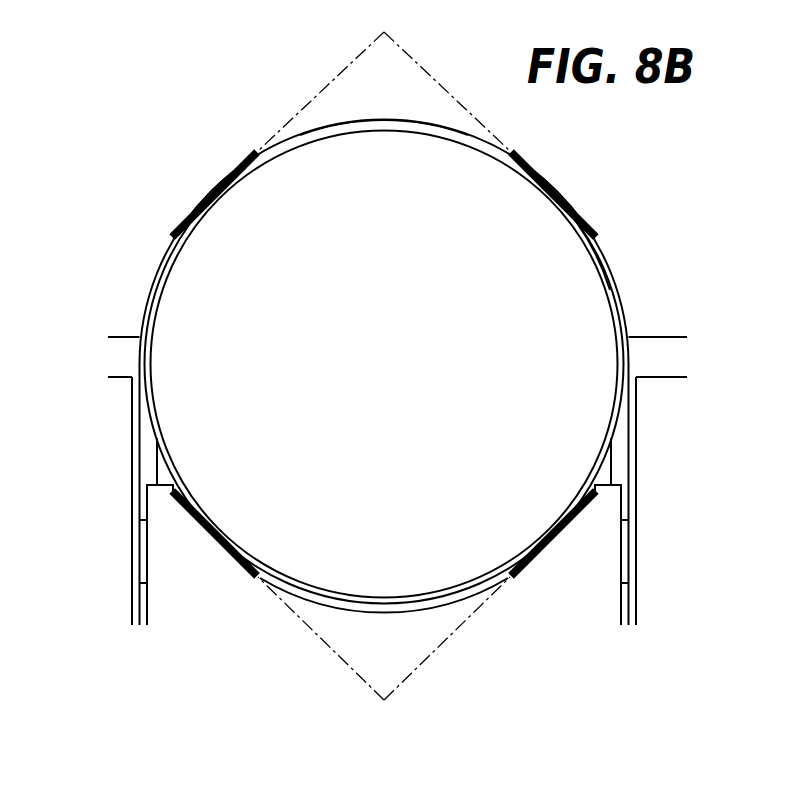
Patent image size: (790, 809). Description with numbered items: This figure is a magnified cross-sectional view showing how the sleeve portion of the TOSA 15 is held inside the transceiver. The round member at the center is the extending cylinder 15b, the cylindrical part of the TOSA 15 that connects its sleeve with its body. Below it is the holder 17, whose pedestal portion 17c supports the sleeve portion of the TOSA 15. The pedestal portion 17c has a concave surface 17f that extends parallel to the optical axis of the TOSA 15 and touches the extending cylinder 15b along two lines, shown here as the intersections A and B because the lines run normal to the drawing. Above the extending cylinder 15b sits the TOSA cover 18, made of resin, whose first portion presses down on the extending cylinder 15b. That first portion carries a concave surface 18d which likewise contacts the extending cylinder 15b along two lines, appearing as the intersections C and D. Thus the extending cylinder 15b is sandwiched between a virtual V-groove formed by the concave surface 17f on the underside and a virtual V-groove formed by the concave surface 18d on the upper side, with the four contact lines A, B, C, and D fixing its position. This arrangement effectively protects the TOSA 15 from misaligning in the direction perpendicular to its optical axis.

The transmitter optical sub-assembly (TOSA) 15 is at (623, 316).
The extending cylinder 15b is at (528, 277).
The holder 17 is at (147, 545).
The pedestal portion 17c is at (182, 610).
The concave surface 17f is at (384, 604).
The TOSA cover 18 is at (131, 271).
The concave surface 18d is at (384, 119).
The contact line A is at (220, 536).
The contact line B is at (549, 536).
The contact line C is at (218, 198).
The contact line D is at (549, 200).